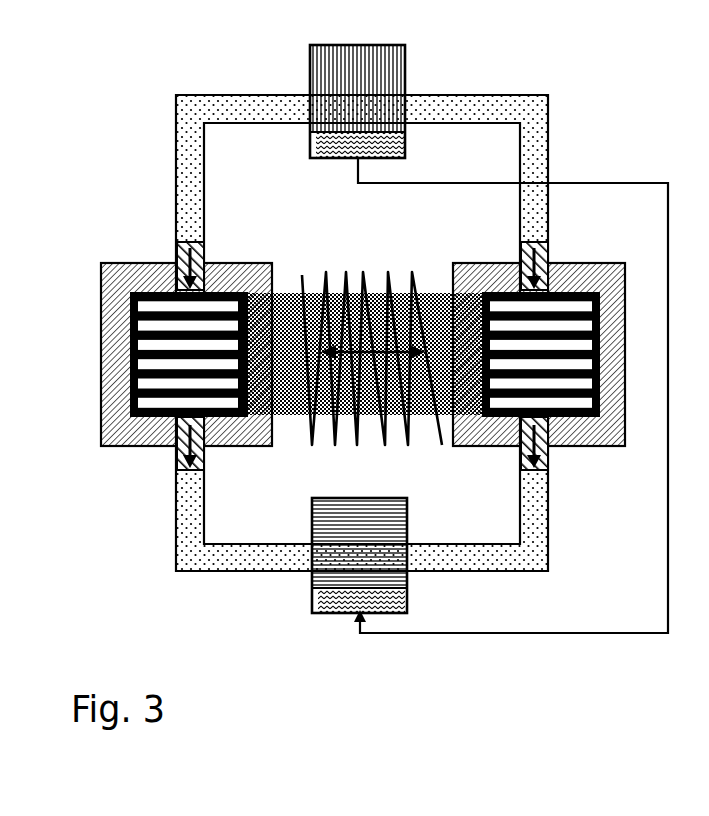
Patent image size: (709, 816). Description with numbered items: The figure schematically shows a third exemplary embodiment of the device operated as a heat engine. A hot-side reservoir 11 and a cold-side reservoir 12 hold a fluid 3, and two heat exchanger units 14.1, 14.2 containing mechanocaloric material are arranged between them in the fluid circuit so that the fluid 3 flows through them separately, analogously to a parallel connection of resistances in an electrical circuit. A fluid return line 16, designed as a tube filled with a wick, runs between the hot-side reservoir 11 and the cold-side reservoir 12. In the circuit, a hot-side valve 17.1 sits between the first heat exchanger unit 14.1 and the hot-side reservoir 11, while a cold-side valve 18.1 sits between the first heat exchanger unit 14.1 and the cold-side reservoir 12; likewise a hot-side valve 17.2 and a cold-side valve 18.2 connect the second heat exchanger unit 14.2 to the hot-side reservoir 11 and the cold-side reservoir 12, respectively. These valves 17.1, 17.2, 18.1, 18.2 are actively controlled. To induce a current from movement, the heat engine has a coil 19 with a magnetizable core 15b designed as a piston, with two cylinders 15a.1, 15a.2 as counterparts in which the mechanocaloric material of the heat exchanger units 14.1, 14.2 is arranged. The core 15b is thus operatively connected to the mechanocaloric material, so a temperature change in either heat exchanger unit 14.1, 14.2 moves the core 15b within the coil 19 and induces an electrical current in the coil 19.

The fluid 3 is at (330, 600).
The hot-side reservoir 11 is at (388, 75).
The cold-side reservoir 12 is at (400, 576).
The first heat exchanger unit 14.1 is at (160, 292).
The second heat exchanger unit 14.2 is at (567, 307).
The first cylinder 15a.1 is at (120, 432).
The second cylinder 15a.2 is at (587, 435).
The magnetizable core 15b is at (438, 312).
The fluid return line 16 is at (646, 180).
The hot-side valve 17.1 is at (202, 252).
The hot-side valve 17.2 is at (517, 243).
The cold-side valve 18.1 is at (205, 457).
The cold-side valve 18.2 is at (522, 457).
The coil 19 is at (348, 270).